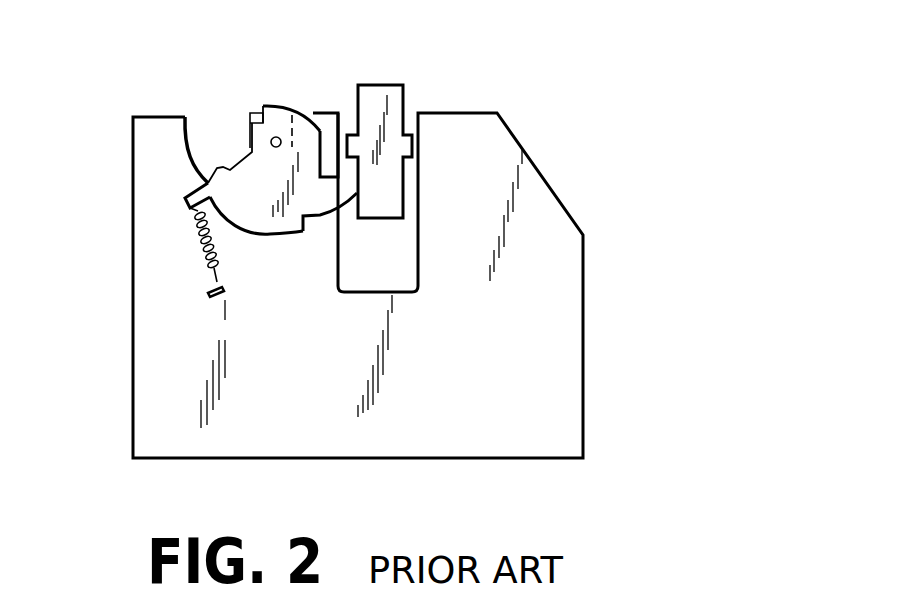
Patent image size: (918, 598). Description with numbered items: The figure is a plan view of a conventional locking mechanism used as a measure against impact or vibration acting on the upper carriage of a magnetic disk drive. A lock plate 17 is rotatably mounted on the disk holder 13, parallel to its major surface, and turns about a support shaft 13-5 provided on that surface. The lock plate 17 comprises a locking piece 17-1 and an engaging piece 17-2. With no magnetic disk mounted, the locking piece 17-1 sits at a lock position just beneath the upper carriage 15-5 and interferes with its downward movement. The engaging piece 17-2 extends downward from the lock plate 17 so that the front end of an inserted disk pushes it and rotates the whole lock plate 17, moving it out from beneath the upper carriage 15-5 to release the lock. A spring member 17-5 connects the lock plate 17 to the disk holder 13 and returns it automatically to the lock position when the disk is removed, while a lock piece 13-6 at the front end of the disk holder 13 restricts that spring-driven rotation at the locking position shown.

The disk holder 13 is at (500, 167).
The support shaft 13-5 is at (310, 125).
The lock piece 13-6 is at (248, 114).
The upper carriage 15-5 is at (384, 130).
The lock plate 17 is at (304, 126).
The locking piece 17-1 is at (323, 202).
The engaging piece 17-2 is at (216, 172).
The spring member 17-5 is at (196, 252).